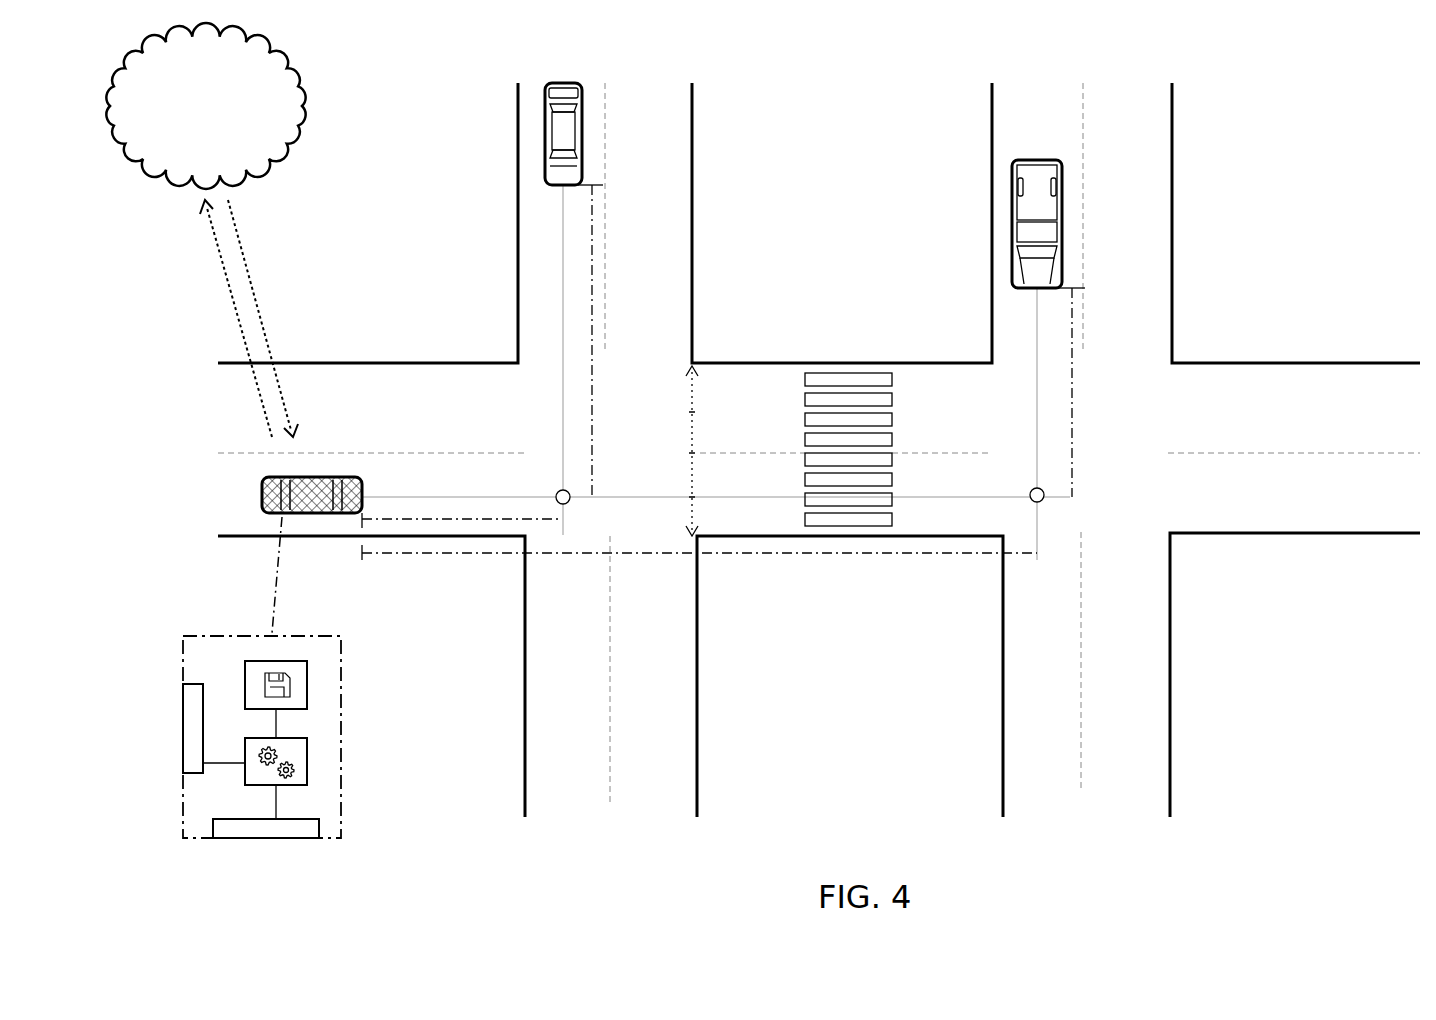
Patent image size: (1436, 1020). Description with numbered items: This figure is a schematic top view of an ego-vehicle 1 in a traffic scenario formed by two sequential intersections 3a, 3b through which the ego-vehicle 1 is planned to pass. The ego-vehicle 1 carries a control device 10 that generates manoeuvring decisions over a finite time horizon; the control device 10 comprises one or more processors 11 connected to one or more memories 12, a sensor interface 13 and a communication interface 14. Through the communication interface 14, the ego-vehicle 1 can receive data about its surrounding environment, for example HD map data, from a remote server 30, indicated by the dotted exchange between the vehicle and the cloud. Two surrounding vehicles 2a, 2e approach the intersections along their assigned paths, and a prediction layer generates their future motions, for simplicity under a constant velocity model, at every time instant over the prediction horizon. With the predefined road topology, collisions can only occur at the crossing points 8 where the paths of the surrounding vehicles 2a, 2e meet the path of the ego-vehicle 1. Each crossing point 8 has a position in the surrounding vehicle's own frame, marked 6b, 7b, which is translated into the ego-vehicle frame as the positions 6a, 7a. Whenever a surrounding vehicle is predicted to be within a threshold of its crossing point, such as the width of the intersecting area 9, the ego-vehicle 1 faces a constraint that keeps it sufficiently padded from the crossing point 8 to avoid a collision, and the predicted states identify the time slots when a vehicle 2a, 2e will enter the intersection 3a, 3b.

The ego-vehicle 1 is at (346, 477).
The surrounding vehicle 2a is at (568, 168).
The surrounding vehicle 2e is at (1040, 272).
The intersection 3a is at (655, 625).
The intersection 3b is at (1173, 493).
The crossing point position in ego-vehicle frame 6a is at (422, 519).
The crossing point position in obstacle vehicle frame 6b is at (590, 325).
The crossing point position in ego-vehicle frame 7a is at (430, 555).
The crossing point position in obstacle vehicle frame 7b is at (1072, 428).
The crossing point 8 is at (567, 503).
The intersecting area 9 is at (693, 412).
The control device 10 is at (270, 740).
The processor 11 is at (308, 740).
The memory 12 is at (300, 660).
The sensor interface 13 is at (290, 838).
The communication interface 14 is at (185, 773).
The remote server 30 is at (194, 116).